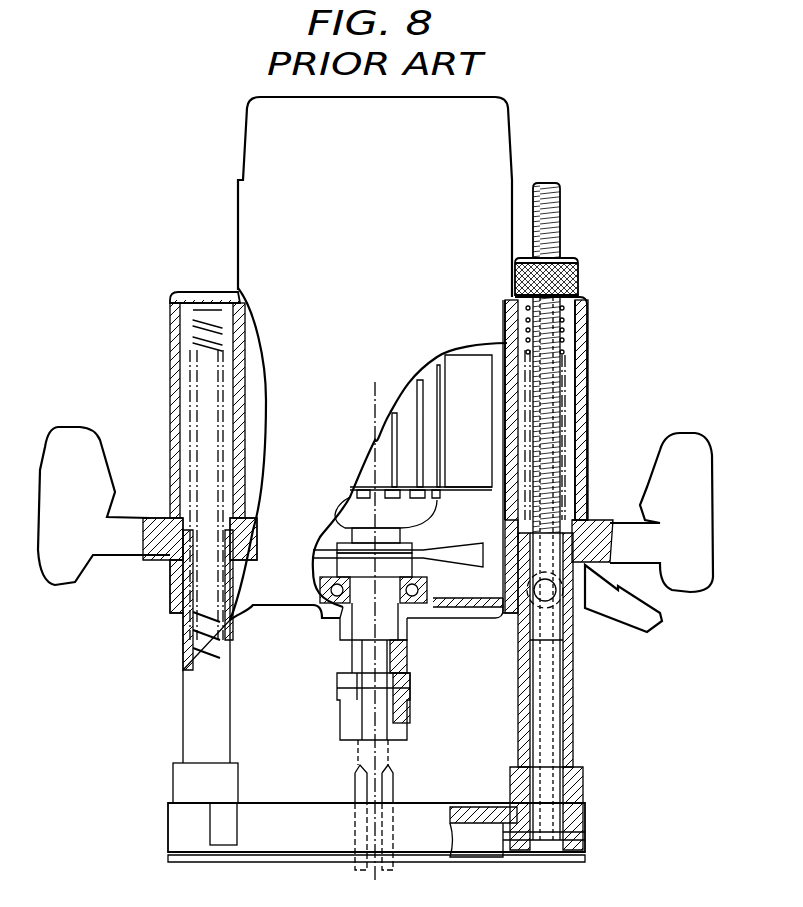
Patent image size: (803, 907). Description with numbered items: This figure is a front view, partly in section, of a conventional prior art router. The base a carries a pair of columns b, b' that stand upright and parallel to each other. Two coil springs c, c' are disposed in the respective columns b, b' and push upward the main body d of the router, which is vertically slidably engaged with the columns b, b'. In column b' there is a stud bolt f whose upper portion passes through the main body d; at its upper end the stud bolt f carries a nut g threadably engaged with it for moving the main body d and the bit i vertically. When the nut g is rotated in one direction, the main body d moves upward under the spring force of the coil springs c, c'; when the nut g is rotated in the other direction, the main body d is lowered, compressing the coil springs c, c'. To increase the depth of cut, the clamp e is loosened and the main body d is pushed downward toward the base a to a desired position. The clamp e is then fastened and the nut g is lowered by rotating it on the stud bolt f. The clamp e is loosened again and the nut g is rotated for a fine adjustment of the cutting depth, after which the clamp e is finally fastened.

The base a is at (168, 827).
The column b is at (198, 660).
The column b' is at (558, 685).
The coil spring c is at (191, 466).
The coil spring c' is at (566, 455).
The main body d is at (238, 208).
The clamp e is at (660, 620).
The stud bolt f is at (560, 222).
The nut g is at (578, 277).
The bit i is at (358, 875).